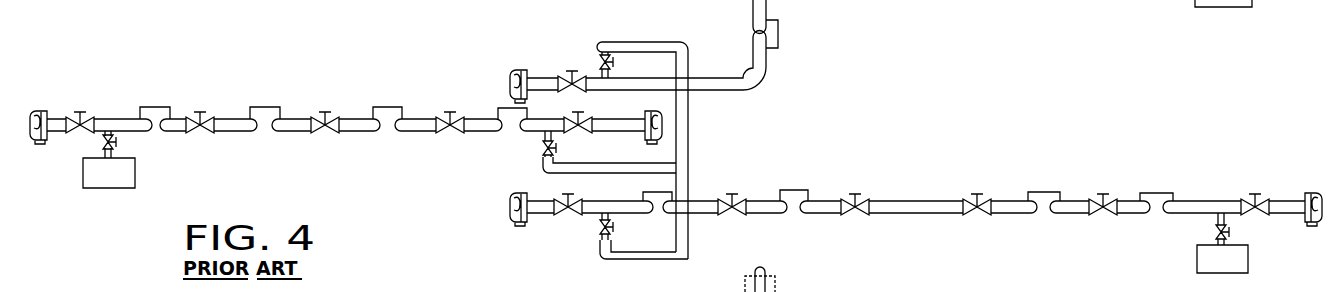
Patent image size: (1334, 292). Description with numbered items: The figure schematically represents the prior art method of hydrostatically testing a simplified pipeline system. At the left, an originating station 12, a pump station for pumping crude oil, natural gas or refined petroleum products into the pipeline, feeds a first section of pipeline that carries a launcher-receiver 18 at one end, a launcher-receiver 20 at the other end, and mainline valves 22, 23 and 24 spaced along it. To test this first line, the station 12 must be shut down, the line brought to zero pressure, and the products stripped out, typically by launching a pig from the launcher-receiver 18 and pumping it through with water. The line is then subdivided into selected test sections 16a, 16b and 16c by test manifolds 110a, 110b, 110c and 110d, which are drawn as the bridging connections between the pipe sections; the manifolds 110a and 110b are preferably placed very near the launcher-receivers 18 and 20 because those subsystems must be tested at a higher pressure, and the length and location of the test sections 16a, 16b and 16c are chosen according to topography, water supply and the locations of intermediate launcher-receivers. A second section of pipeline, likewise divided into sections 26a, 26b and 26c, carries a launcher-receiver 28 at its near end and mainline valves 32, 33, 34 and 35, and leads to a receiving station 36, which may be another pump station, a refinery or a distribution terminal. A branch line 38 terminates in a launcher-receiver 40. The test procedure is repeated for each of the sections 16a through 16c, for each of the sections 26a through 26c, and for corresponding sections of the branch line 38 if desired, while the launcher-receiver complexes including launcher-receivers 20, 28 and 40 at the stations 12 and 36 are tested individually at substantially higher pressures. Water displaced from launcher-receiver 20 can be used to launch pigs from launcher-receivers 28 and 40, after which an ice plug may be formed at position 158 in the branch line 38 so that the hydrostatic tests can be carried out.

The originating station 12 is at (135, 176).
The test section 16a is at (234, 131).
The test section 16b is at (356, 131).
The test section 16c is at (480, 131).
The launcher-receiver 18 is at (111, 105).
The launcher-receiver 20 is at (578, 133).
The mainline valve 22 is at (221, 100).
The mainline valve 23 is at (338, 100).
The mainline valve 24 is at (474, 100).
The section of line 26 26a is at (772, 213).
The section of line 26 26b is at (905, 213).
The section of line 26 26c is at (1140, 214).
The launcher-receiver 28 is at (546, 214).
The mainline valve 32 is at (746, 199).
The mainline valve 33 is at (887, 174).
The mainline valve 34 is at (976, 199).
The mainline valve 35 is at (1126, 178).
The receiving station 36 is at (1197, 267).
The branch line 38 is at (760, 268).
The launcher-receiver 40 is at (545, 78).
The test manifold 110a is at (158, 107).
The test manifold 110b is at (264, 107).
The test manifold 110c is at (391, 107).
The test manifold 110d is at (500, 108).
The ice plug position 158 is at (773, 284).